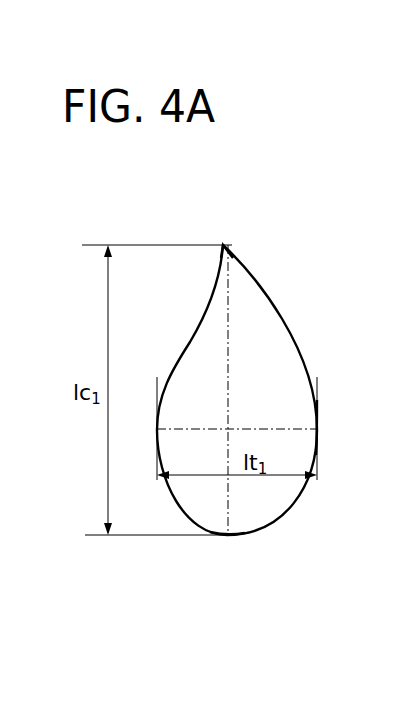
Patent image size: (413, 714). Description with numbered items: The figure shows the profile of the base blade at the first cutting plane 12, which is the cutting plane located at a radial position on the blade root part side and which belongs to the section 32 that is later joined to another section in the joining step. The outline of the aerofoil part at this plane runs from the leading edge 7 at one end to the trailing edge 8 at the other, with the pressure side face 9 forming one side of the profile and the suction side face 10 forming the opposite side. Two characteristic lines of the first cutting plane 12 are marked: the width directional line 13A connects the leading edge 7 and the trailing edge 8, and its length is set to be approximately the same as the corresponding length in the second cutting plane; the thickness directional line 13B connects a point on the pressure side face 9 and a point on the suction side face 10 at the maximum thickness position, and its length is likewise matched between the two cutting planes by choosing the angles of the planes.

The leading edge 7 is at (227, 536).
The trailing edge 8 is at (223, 244).
The pressure side face 9 is at (190, 342).
The suction side face 10 is at (306, 360).
The first cutting plane 12 is at (260, 327).
The width directional line 13A is at (230, 512).
The thickness directional line 13B is at (287, 428).
The section 32 is at (330, 283).